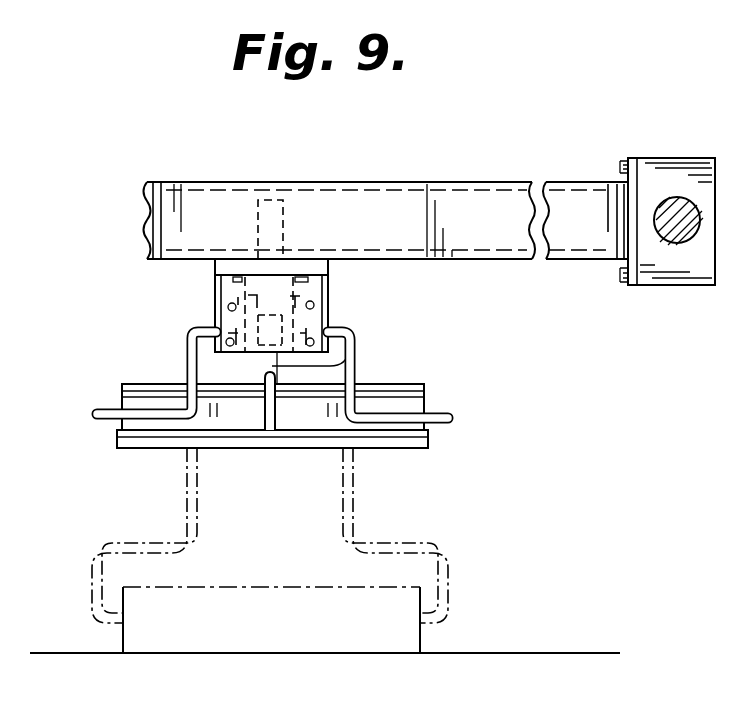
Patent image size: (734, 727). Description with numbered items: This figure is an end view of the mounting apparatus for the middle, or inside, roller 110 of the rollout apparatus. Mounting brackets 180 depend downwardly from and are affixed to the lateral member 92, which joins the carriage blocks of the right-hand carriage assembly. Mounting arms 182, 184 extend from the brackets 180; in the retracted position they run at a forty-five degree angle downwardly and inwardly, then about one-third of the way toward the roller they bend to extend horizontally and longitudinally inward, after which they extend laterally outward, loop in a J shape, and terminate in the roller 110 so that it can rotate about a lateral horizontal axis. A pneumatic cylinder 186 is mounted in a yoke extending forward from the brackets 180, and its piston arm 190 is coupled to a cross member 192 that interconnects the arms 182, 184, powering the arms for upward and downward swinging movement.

The lateral member 92 is at (502, 243).
The roller 110 is at (425, 394).
The mounting brackets 180 is at (215, 284).
The mounting arm 182 is at (187, 338).
The mounting arm 184 is at (356, 373).
The pneumatic cylinder 186 is at (297, 213).
The piston arm 190 is at (346, 347).
The cross member 192 is at (302, 418).